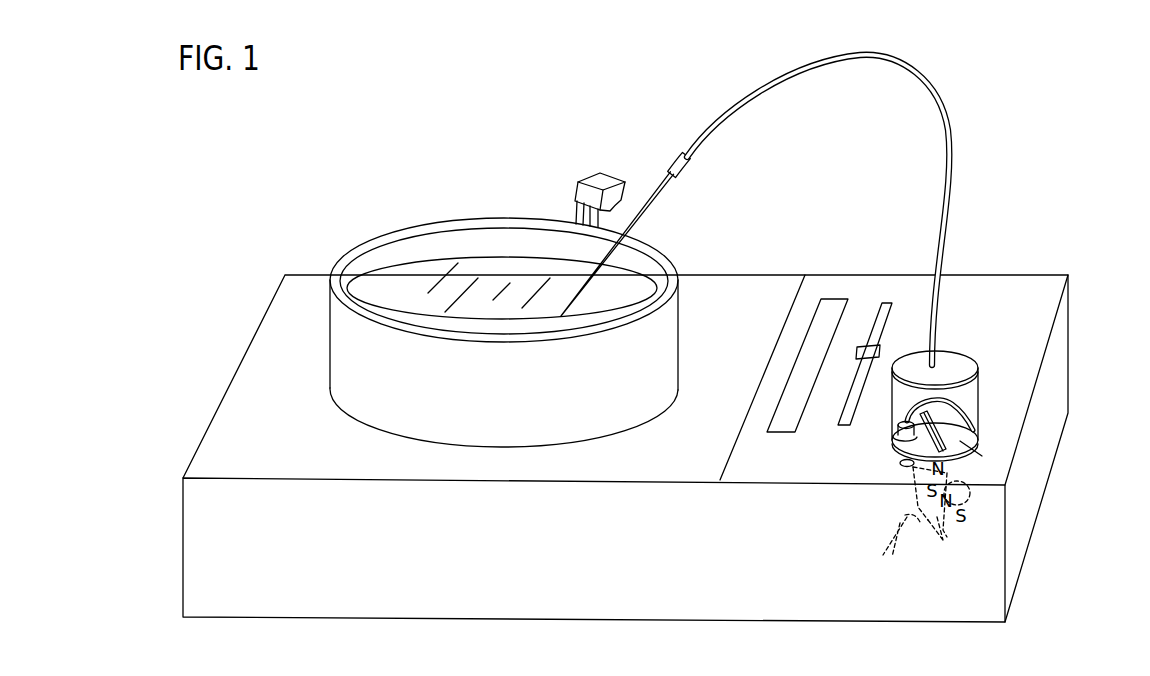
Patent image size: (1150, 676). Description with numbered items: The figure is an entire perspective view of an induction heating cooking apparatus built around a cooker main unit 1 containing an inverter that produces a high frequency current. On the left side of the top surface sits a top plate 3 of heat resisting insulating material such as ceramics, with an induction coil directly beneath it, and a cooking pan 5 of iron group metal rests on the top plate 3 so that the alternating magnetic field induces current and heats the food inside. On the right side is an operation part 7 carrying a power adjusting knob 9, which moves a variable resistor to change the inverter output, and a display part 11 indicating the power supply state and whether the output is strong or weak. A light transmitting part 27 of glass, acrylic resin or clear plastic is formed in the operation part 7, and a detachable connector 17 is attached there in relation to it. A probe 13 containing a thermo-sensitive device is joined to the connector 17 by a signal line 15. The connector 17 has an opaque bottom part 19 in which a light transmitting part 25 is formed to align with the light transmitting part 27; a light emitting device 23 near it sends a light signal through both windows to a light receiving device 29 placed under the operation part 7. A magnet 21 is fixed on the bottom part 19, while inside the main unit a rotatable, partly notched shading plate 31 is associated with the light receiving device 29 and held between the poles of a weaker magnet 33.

The cooker main unit 1 is at (1079, 276).
The top plate 3 is at (242, 385).
The cooking pan 5 is at (477, 212).
The operation part 7 is at (1035, 330).
The power adjusting knob 9 is at (879, 303).
The display part 11 is at (828, 302).
The probe 13 is at (655, 185).
The signal line 15 is at (950, 128).
The connector 17 is at (958, 344).
The bottom part 19 is at (983, 460).
The magnet 21 is at (942, 432).
The light emitting device 23 is at (893, 425).
The light transmitting part 25 is at (897, 438).
The light transmitting part 27 is at (900, 467).
The light receiving device 29 is at (908, 518).
The shading plate 31 is at (968, 491).
The magnet 33 is at (953, 537).